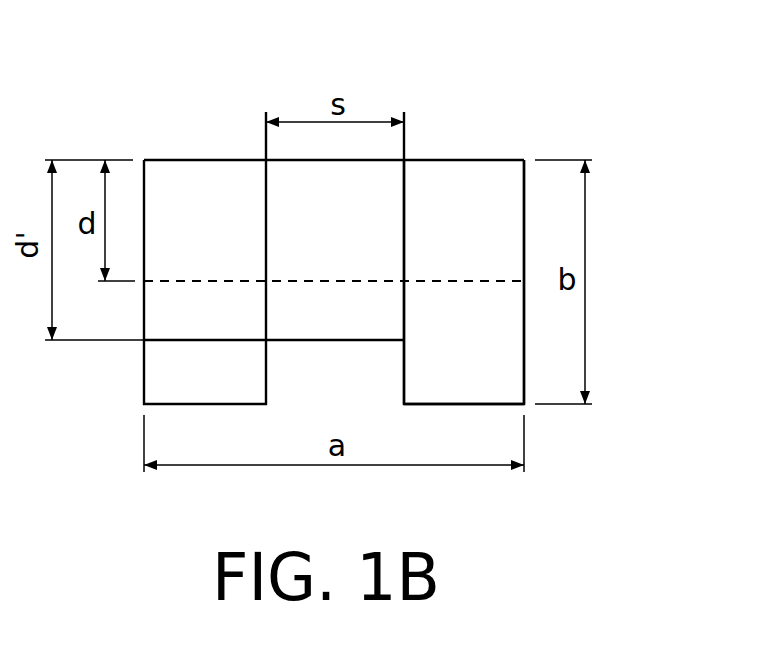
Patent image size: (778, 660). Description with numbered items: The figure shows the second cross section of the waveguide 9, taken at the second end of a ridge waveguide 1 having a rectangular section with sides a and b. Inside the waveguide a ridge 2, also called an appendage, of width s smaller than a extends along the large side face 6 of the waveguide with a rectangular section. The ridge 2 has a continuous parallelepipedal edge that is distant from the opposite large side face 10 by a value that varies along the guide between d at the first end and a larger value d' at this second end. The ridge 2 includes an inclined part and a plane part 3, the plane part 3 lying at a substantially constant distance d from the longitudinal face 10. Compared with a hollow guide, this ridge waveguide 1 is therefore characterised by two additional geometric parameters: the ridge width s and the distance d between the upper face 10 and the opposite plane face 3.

The waveguide 1 is at (547, 85).
The ridge 2 is at (318, 282).
The plane part 3 is at (325, 341).
The large side face 6 is at (497, 405).
The second cross section of the waveguide 9 is at (506, 218).
The large side face 10 is at (476, 158).